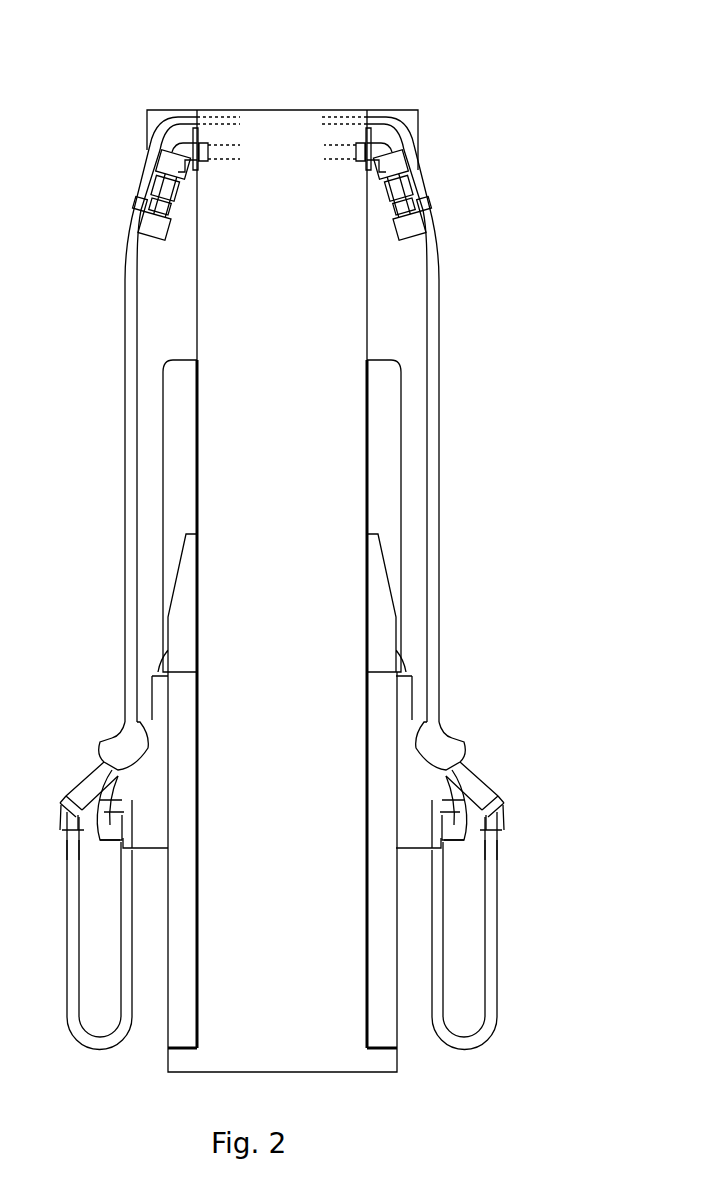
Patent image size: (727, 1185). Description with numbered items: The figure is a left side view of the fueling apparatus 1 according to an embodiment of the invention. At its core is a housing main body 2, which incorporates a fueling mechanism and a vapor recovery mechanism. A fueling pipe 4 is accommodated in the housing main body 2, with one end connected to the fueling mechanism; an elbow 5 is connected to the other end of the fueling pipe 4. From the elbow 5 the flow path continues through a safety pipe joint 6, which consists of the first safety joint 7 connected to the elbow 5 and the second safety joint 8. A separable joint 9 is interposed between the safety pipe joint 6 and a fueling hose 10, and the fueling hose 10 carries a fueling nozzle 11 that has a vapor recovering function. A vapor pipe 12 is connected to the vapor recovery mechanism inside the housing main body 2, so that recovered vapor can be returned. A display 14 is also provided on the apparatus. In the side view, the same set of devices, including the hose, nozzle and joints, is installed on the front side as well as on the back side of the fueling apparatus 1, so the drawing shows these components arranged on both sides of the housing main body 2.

The fueling apparatus 1 is at (432, 27).
The housing main body 2 is at (298, 110).
The fueling pipe 4 is at (340, 130).
The elbow 5 is at (405, 152).
The safety pipe joint 6 is at (463, 227).
The first safety joint 7 is at (418, 203).
The second safety joint 8 is at (420, 215).
The separable joint 9 is at (420, 228).
The fueling hose 10 is at (440, 380).
The fueling nozzle 11 is at (455, 764).
The vapor pipe 12 is at (420, 192).
The display 14 is at (395, 362).